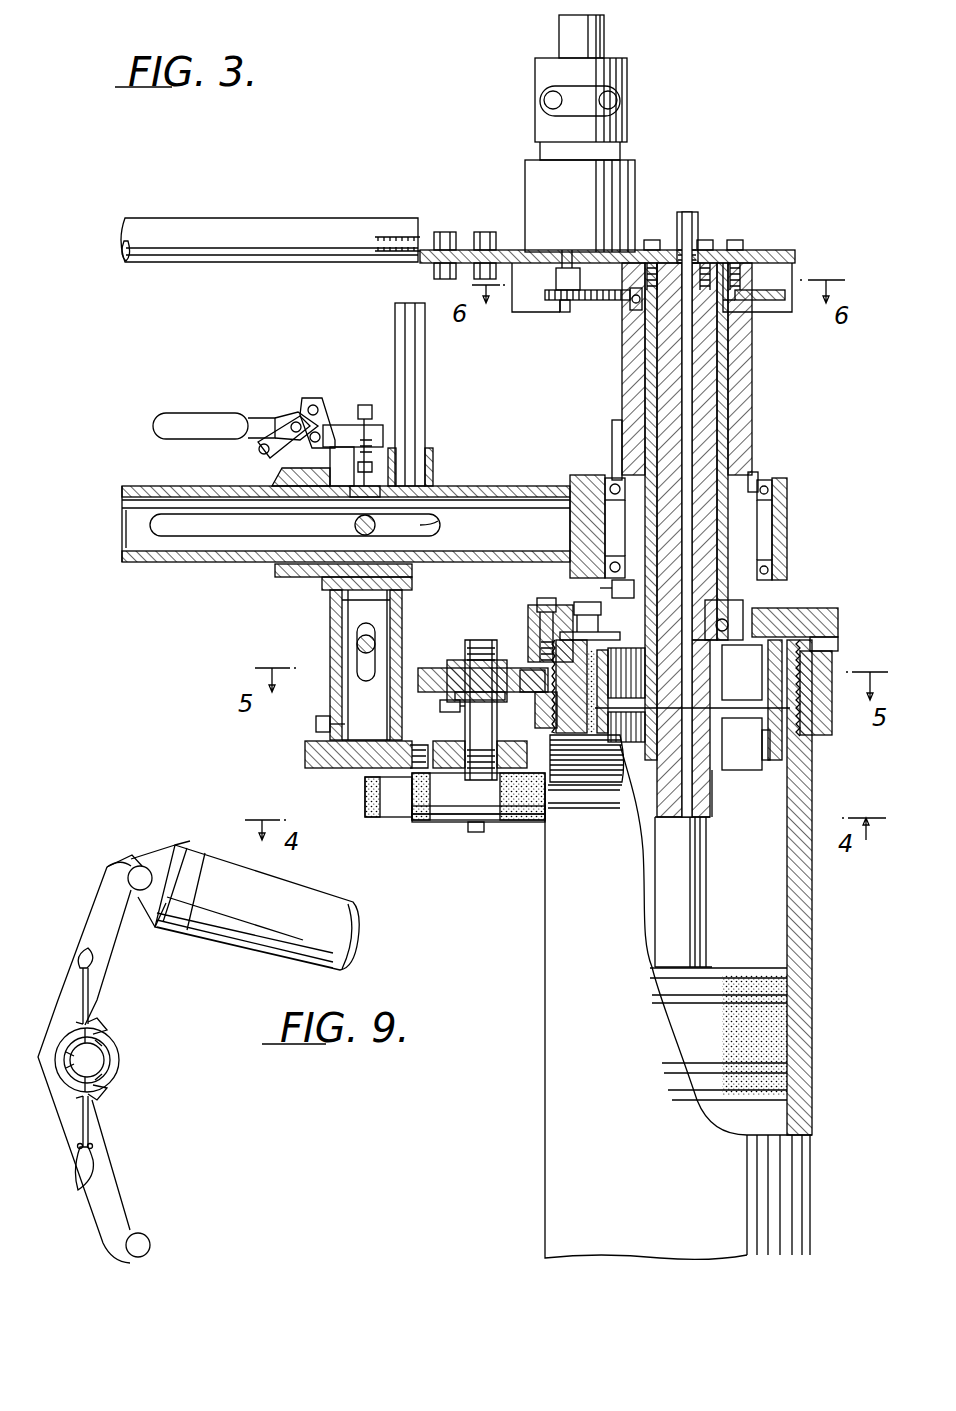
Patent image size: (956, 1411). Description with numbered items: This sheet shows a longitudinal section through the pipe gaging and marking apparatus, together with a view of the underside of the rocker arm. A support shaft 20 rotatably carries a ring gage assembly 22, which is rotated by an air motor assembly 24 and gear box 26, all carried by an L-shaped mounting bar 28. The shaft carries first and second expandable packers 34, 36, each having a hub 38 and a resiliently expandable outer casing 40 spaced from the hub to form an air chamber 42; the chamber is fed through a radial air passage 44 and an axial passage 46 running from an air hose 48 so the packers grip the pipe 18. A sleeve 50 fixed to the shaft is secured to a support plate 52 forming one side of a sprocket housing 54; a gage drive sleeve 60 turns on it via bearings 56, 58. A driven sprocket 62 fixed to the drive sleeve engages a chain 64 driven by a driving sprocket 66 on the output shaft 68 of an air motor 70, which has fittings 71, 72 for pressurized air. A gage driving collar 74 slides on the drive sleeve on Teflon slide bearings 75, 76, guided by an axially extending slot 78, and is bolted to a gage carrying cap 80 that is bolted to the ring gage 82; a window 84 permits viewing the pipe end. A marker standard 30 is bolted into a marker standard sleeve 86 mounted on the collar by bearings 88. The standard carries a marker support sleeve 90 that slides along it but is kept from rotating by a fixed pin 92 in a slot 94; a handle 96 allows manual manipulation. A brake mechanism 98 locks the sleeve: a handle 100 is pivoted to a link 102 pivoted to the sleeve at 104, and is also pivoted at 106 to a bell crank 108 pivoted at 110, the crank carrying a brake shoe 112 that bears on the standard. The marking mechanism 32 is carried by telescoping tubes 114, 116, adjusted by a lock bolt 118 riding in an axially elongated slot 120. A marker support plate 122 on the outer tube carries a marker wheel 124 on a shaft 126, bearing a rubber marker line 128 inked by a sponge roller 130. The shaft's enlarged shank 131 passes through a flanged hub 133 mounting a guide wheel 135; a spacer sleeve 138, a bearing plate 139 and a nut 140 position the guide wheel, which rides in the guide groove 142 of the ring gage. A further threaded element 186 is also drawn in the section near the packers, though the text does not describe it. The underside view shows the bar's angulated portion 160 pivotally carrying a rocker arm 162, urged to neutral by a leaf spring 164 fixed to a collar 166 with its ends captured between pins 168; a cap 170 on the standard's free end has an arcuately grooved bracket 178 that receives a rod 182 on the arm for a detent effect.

In FIG. 3, the pipe 18 is at (812, 962).
In FIG. 3, the support shaft 20 is at (705, 360).
In FIG. 3, the ring gage assembly 22 is at (825, 587).
In FIG. 3, the air motor assembly 24 is at (513, 71).
In FIG. 3, the gear box 26 is at (525, 180).
In FIG. 3, the mounting bar 28 is at (250, 228).
In FIG. 3, the marker standard 30 is at (494, 490).
In FIG. 9, the marker standard 30 is at (258, 950).
In FIG. 3, the marking mechanism 32 is at (284, 749).
In FIG. 3, the first expandable packer 34 is at (759, 946).
In FIG. 3, the second expandable packer 36 is at (735, 782).
In FIG. 3, the hub 38 is at (685, 741).
In FIG. 3, the outer casing 40 is at (800, 735).
In FIG. 3, the air chamber 42 is at (762, 750).
In FIG. 3, the radial air passage 44 is at (755, 698).
In FIG. 3, the axial passage 46 is at (690, 385).
In FIG. 3, the air hose 48 is at (698, 220).
In FIG. 3, the sleeve 50 is at (722, 404).
In FIG. 3, the support plate 52 is at (766, 250).
In FIG. 3, the sprocket housing 54 is at (792, 275).
In FIG. 3, the bearing 56 is at (740, 305).
In FIG. 3, the bearing 58 is at (695, 700).
In FIG. 3, the gage drive sleeve 60 is at (622, 367).
In FIG. 3, the driven sprocket 62 is at (630, 302).
In FIG. 3, the chain 64 is at (556, 300).
In FIG. 3, the driving sprocket 66 is at (566, 312).
In FIG. 3, the output shaft 68 is at (568, 262).
In FIG. 3, the air motor 70 is at (627, 73).
In FIG. 3, the fitting 71 is at (544, 100).
In FIG. 3, the fitting 72 is at (618, 100).
In FIG. 3, the gage driving collar 74 is at (760, 520).
In FIG. 3, the slide bearing 75 is at (752, 475).
In FIG. 3, the slide bearing 76 is at (745, 615).
In FIG. 3, the axially extending slot 78 is at (612, 432).
In FIG. 3, the gage carrying cap 80 is at (830, 612).
In FIG. 3, the ring gage 82 is at (818, 700).
In FIG. 3, the window 84 is at (842, 645).
In FIG. 3, the marker standard sleeve 86 is at (563, 475).
In FIG. 3, the bearings 88 is at (770, 490).
In FIG. 3, the marker support sleeve 90 is at (305, 578).
In FIG. 3, the fixed pin 92 is at (356, 530).
In FIG. 3, the slot 94 is at (425, 534).
In FIG. 3, the handle 96 is at (395, 320).
In FIG. 3, the brake mechanism 98 is at (297, 382).
In FIG. 3, the handle 100 is at (196, 413).
In FIG. 3, the link 102 is at (282, 416).
In FIG. 3, the pivot 104 is at (258, 448).
In FIG. 3, the pivot 106 is at (316, 404).
In FIG. 3, the bell crank 108 is at (340, 425).
In FIG. 3, the pivot 110 is at (272, 470).
In FIG. 3, the brake shoe 112 is at (360, 497).
In FIG. 3, the telescoping tube 114 is at (330, 608).
In FIG. 3, the telescoping tube 116 is at (332, 690).
In FIG. 3, the lock bolt 118 is at (358, 640).
In FIG. 3, the axially elongated slot 120 is at (362, 652).
In FIG. 3, the marker support plate 122 is at (305, 760).
In FIG. 3, the marker wheel 124 is at (525, 822).
In FIG. 3, the shaft 126 is at (490, 778).
In FIG. 3, the marker line 128 is at (440, 814).
In FIG. 3, the sponge roller 130 is at (365, 790).
In FIG. 3, the shank 131 is at (492, 706).
In FIG. 3, the flanged hub 133 is at (506, 630).
In FIG. 3, the guide wheel 135 is at (436, 655).
In FIG. 3, the spacer sleeve 138 is at (452, 712).
In FIG. 3, the bearing plate 139 is at (462, 712).
In FIG. 3, the nut 140 is at (462, 660).
In FIG. 3, the guide groove 142 is at (822, 676).
In FIG. 9, the angulated portion 160 is at (110, 1064).
In FIG. 9, the rocker arm 162 is at (96, 896).
In FIG. 9, the leaf spring 164 is at (96, 996).
In FIG. 9, the collar 166 is at (104, 1040).
In FIG. 9, the pins 168 is at (94, 970).
In FIG. 9, the cap 170 is at (184, 845).
In FIG. 9, the bracket 178 is at (142, 852).
In FIG. 9, the rod 182 is at (128, 872).
In FIG. 3, the threaded collar 186 is at (565, 810).